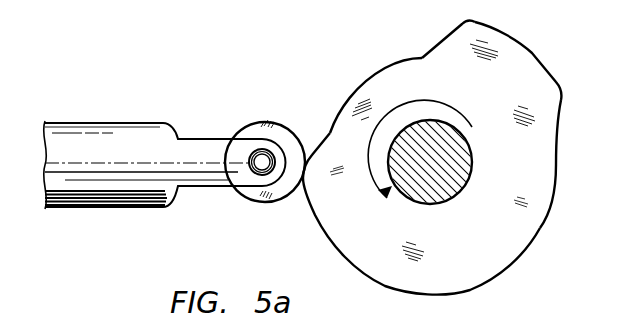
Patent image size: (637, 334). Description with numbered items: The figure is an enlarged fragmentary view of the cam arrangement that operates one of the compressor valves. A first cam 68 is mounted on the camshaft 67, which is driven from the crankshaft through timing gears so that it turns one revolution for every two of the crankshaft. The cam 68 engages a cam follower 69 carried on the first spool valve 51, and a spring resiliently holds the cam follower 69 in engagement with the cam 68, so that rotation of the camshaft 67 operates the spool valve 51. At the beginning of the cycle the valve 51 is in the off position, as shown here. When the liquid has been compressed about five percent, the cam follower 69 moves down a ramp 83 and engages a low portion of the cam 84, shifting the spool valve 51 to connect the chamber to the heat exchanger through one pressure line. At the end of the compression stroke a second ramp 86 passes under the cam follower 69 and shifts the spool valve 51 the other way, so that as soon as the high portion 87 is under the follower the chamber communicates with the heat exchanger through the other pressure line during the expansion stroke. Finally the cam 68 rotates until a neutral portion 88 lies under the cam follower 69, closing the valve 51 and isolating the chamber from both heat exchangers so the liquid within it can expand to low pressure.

The first spool valve 51 is at (150, 208).
The cam follower 69 is at (260, 203).
The ramp 83 is at (317, 151).
The low portion of the cam 84 is at (358, 86).
The ramp 86 is at (443, 40).
The high portion 87 is at (532, 53).
The neutral portion 88 is at (557, 162).
The first cam 68 is at (329, 247).
The camshaft 67 is at (459, 193).